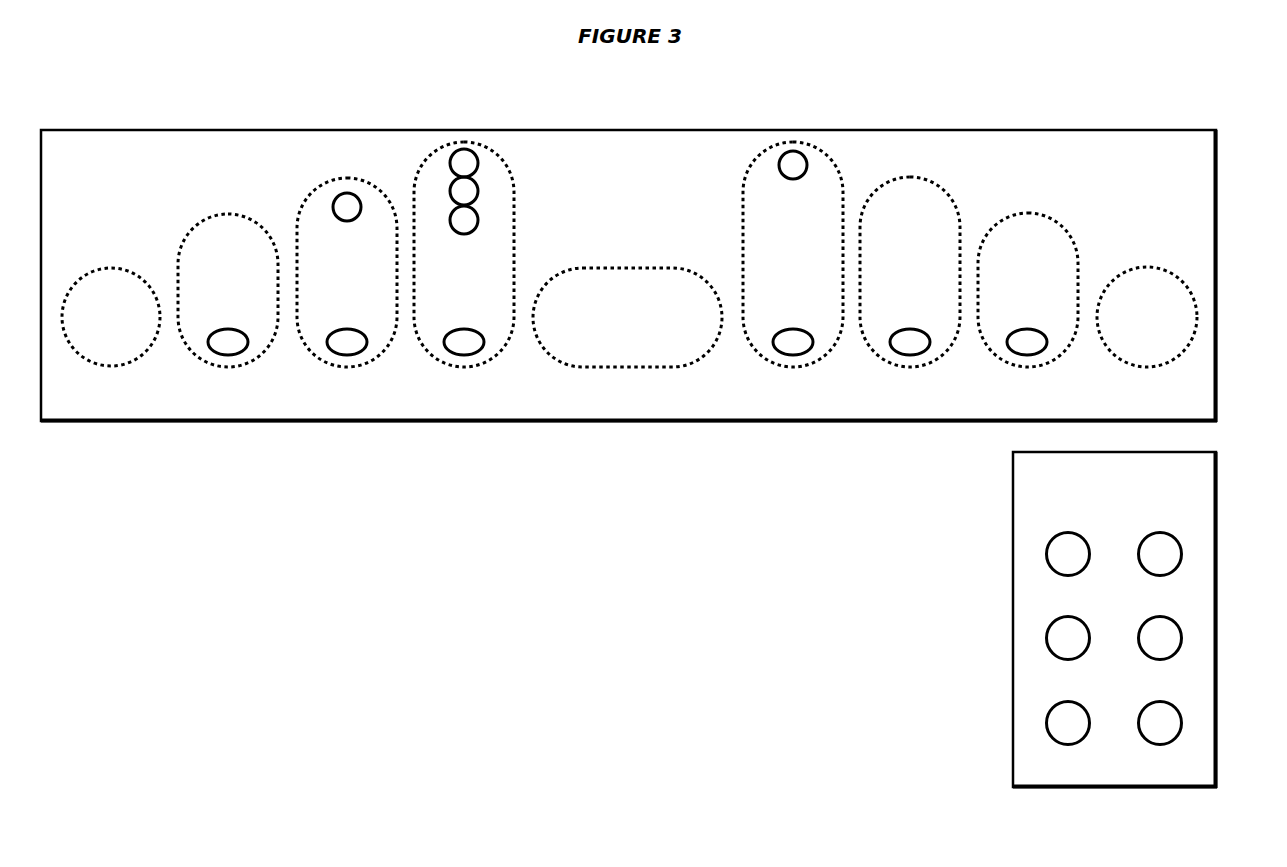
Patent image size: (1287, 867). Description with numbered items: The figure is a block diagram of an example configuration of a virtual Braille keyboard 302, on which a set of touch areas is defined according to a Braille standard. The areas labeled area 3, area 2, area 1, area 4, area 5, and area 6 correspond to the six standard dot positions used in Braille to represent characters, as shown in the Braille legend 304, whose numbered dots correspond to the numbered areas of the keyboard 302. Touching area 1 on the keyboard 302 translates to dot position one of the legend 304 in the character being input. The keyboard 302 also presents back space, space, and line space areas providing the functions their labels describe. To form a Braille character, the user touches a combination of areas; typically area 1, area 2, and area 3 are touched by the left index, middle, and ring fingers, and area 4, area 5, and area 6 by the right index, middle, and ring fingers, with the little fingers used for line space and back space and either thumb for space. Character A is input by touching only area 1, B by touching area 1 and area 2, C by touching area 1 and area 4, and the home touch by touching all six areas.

The virtual Braille keyboard 302 is at (629, 276).
The Braille legend 304 is at (1115, 620).
The area 1 is at (464, 254).
The area 2 is at (347, 272).
The area 3 is at (228, 290).
The area 4 is at (793, 254).
The area 5 is at (910, 272).
The area 6 is at (1028, 290).